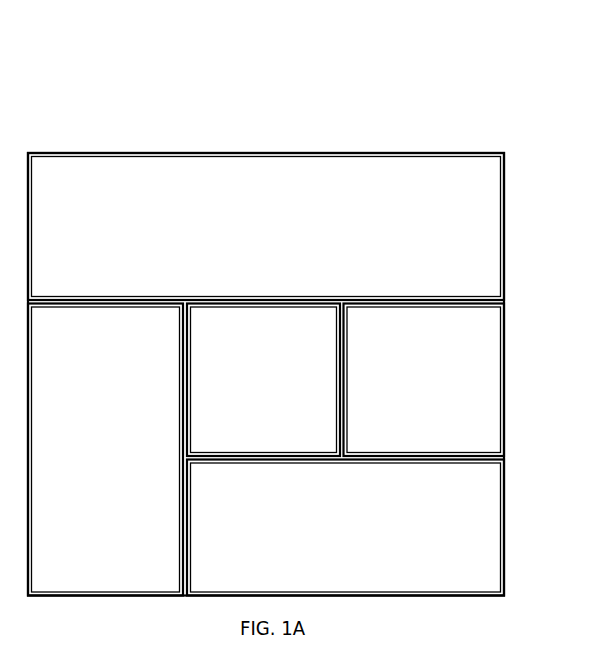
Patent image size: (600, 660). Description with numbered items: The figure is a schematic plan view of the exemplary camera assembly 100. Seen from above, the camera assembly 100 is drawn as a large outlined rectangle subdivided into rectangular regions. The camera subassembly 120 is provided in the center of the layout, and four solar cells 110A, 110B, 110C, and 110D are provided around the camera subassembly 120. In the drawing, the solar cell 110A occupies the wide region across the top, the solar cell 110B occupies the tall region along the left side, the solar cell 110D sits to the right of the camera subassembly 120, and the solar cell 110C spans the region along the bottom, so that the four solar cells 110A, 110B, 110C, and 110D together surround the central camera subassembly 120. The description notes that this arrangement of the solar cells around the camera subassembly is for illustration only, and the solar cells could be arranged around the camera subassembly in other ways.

The camera assembly 100 is at (476, 129).
The solar cell 110A is at (495, 183).
The solar cell 110B is at (175, 333).
The solar cell 110C is at (492, 486).
The solar cell 110D is at (496, 332).
The camera subassembly 120 is at (332, 332).